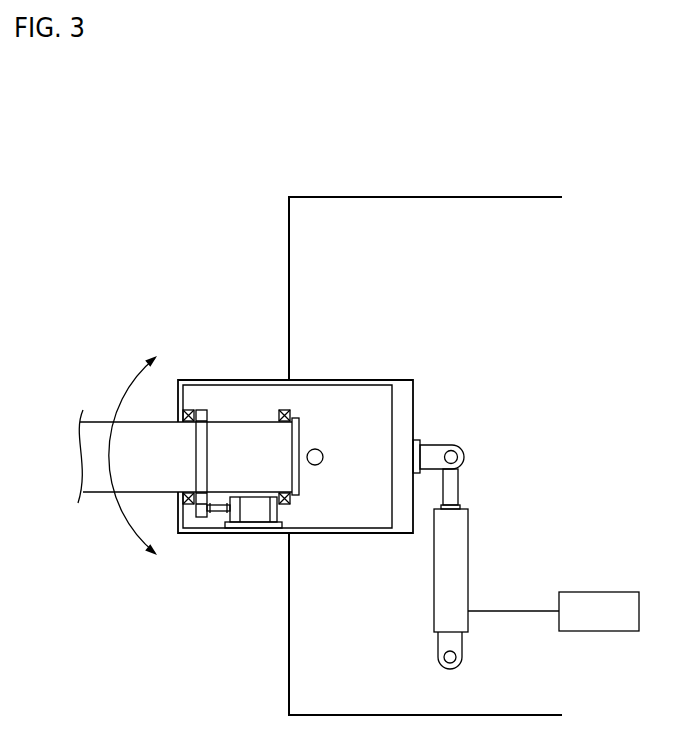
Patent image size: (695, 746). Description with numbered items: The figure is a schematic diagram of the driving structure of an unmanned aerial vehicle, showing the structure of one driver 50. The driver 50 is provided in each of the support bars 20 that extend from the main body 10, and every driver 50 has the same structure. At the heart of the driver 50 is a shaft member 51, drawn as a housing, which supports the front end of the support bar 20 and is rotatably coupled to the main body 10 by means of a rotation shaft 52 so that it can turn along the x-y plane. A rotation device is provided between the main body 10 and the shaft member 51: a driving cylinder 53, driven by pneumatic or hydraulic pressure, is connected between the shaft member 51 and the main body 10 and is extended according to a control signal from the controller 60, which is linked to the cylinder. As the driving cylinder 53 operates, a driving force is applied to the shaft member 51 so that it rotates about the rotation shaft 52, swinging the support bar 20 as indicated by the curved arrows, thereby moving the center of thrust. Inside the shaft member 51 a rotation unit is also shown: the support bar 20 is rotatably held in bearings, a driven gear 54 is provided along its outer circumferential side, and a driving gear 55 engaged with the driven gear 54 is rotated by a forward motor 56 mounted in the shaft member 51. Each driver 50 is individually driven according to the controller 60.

The main body 10 is at (425, 190).
The support bar 20 is at (95, 485).
The driver 50 is at (295, 432).
The shaft member 51 is at (305, 383).
The rotation shaft 52 is at (321, 451).
The driving cylinder 53 is at (466, 531).
The driven gear 54 is at (192, 505).
The driving gear 55 is at (203, 518).
The forward motor 56 is at (259, 523).
The controller 60 is at (608, 592).